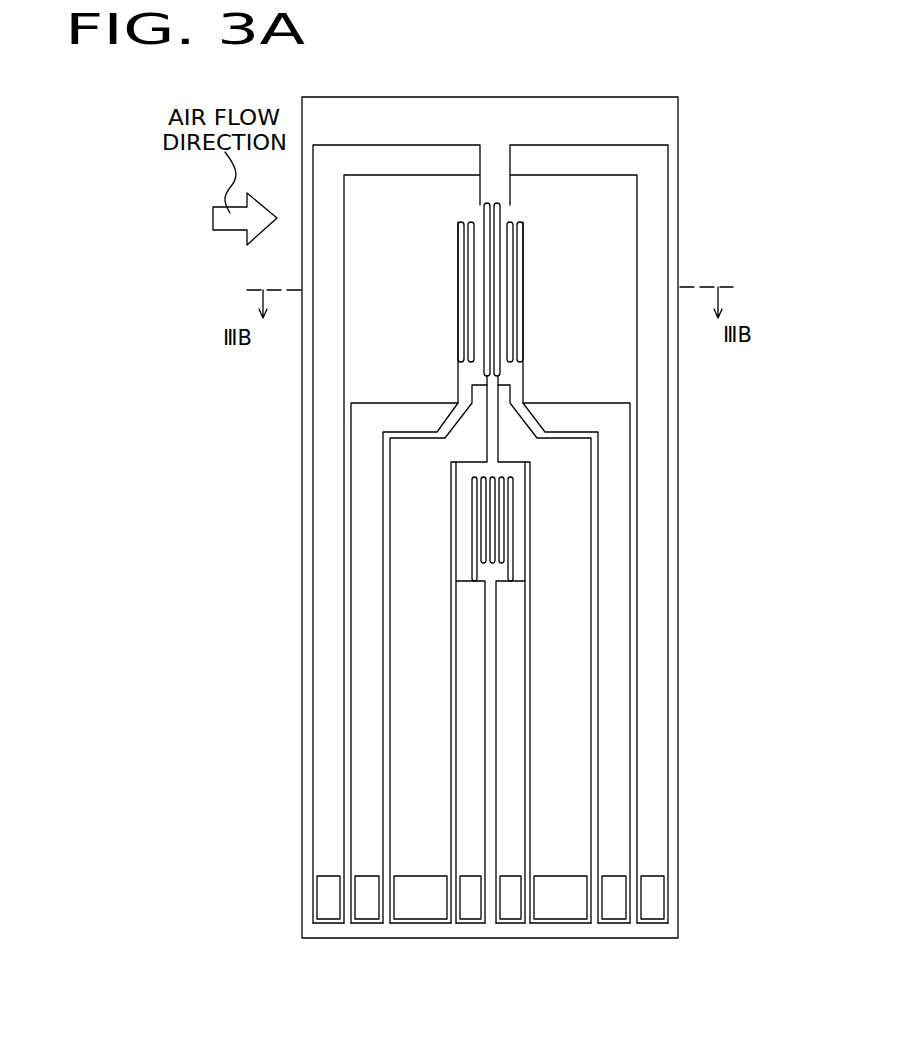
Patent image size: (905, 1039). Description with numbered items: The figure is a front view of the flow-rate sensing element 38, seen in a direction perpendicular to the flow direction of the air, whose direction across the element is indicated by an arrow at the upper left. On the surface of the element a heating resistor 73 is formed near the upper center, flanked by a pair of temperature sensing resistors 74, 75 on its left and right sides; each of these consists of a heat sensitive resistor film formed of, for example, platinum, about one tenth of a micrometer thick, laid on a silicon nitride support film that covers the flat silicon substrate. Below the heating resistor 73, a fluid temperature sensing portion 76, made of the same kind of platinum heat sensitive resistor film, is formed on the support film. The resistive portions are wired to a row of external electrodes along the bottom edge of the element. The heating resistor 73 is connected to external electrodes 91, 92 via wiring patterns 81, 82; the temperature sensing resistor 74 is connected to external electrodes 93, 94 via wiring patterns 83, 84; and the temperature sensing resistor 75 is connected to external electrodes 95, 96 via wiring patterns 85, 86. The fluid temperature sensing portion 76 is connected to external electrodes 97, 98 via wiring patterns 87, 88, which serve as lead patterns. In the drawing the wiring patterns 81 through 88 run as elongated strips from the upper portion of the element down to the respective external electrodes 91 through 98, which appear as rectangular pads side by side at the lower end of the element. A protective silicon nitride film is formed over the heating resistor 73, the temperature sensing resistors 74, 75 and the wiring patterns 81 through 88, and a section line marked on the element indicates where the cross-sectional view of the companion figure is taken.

The flow-rate sensing element 38 is at (549, 93).
The heating resistor 73 is at (503, 208).
The temperature sensing resistor 74 is at (458, 318).
The temperature sensing resistor 75 is at (527, 320).
The fluid temperature sensing portion 76 is at (510, 518).
The wiring pattern 81 is at (408, 742).
The wiring pattern 82 is at (567, 742).
The wiring pattern 83 is at (333, 643).
The wiring pattern 84 is at (365, 695).
The wiring pattern 85 is at (645, 640).
The wiring pattern 86 is at (612, 690).
The wiring pattern 87 is at (470, 802).
The wiring pattern 88 is at (508, 800).
The external electrode 91 is at (405, 910).
The external electrode 92 is at (568, 910).
The external electrode 93 is at (327, 910).
The external electrode 94 is at (362, 910).
The external electrode 95 is at (650, 910).
The external electrode 96 is at (610, 910).
The external electrode 97 is at (471, 910).
The external electrode 98 is at (514, 910).